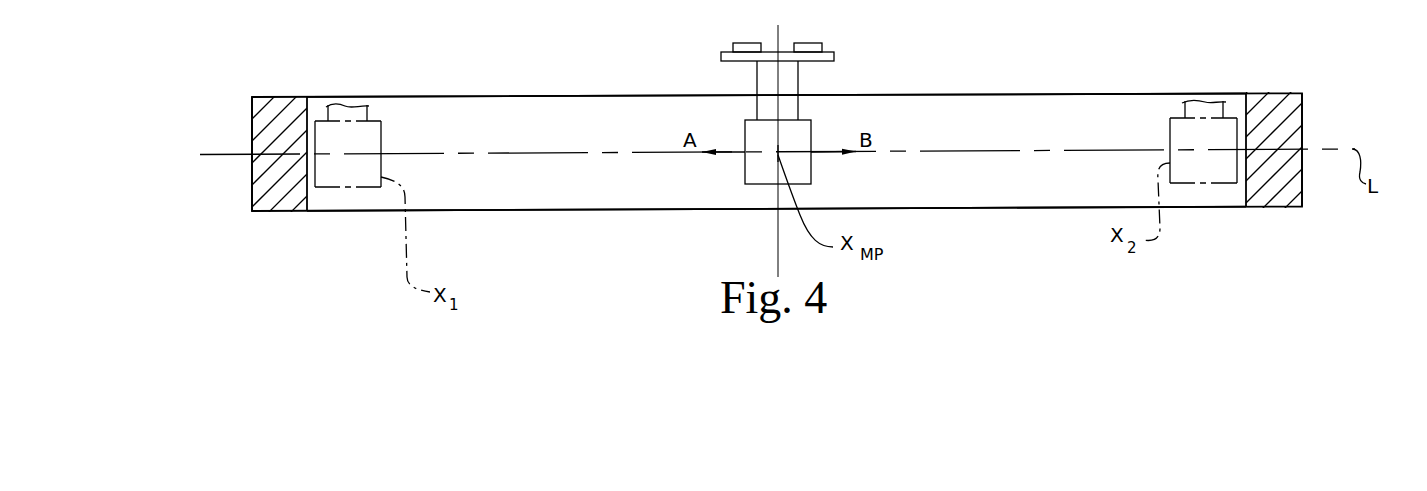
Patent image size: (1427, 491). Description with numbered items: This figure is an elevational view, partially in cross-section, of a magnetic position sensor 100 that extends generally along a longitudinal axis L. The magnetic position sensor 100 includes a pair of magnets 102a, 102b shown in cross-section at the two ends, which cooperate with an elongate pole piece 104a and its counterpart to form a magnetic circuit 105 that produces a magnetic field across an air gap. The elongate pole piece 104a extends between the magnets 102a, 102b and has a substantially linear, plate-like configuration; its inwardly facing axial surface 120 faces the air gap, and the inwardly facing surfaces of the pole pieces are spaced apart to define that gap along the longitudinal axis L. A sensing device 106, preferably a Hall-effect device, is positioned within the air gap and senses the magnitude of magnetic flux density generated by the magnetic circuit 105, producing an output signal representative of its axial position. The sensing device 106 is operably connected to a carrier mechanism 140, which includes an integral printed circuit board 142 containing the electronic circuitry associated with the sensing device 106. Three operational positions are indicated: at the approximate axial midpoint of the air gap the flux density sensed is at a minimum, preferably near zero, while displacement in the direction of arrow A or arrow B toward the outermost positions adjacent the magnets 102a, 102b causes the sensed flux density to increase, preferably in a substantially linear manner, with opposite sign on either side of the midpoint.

The magnetic position sensor 100 is at (543, 78).
The magnet 102a is at (252, 130).
The magnet 102b is at (1305, 105).
The elongate pole piece 104a is at (943, 94).
The magnetic circuit 105 is at (973, 220).
The sensing device 106 is at (743, 162).
The inwardly facing axial surface 120 is at (1097, 119).
The carrier mechanism 140 is at (748, 69).
The printed circuit board 142 is at (834, 53).